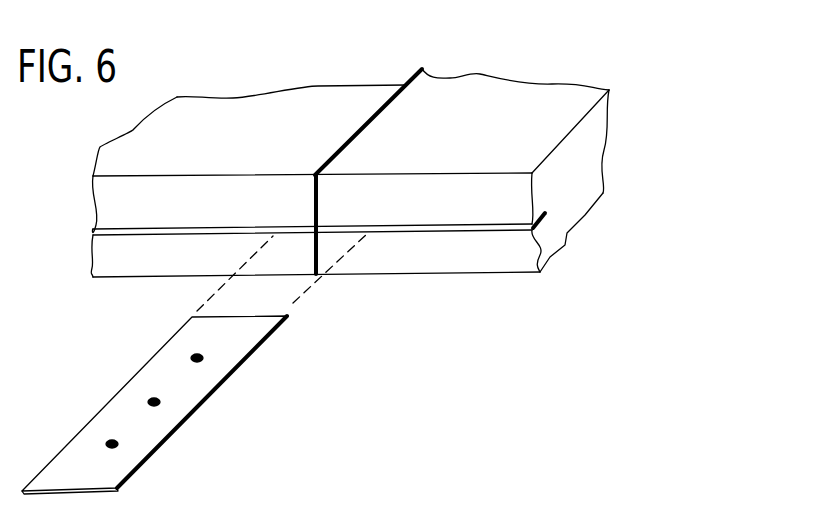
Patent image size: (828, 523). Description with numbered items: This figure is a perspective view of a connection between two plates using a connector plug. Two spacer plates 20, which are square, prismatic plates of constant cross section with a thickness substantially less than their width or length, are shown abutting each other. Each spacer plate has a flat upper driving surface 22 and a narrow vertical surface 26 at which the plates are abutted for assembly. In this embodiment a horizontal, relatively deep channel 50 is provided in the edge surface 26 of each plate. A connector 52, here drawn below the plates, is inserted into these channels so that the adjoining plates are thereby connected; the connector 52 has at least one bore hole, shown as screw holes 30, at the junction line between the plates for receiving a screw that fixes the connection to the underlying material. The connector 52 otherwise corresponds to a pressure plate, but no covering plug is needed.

The spacer plate 20 is at (80, 190).
The flat upper driving surface 22 is at (323, 98).
The narrow vertical surface 26 is at (105, 267).
The screw hole 30 is at (108, 443).
The horizontal channel 50 is at (540, 232).
The connector 52 is at (230, 402).